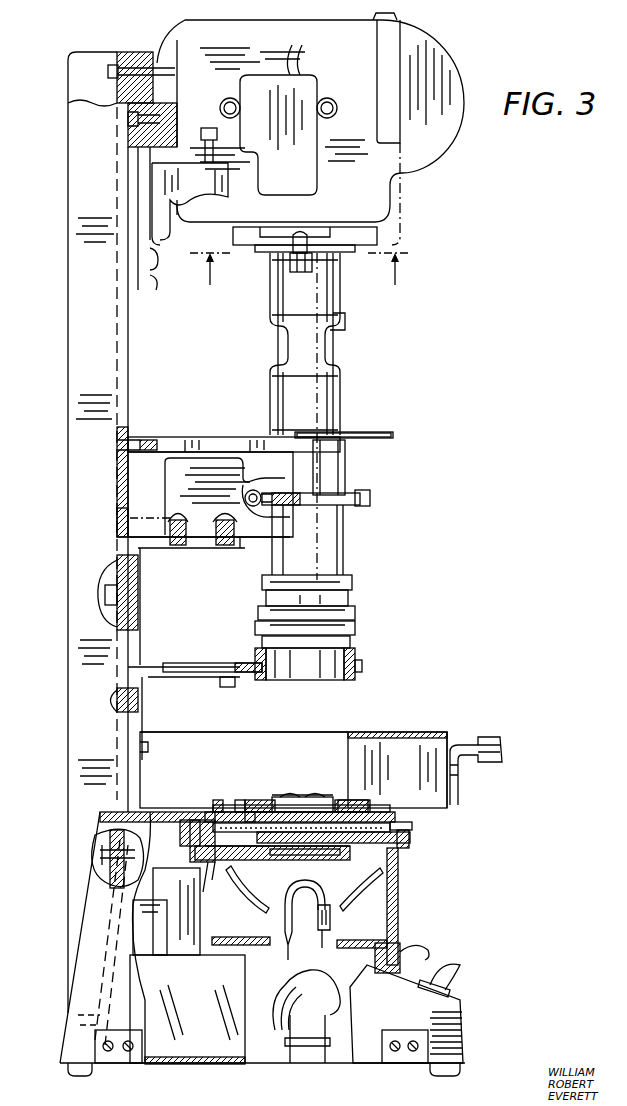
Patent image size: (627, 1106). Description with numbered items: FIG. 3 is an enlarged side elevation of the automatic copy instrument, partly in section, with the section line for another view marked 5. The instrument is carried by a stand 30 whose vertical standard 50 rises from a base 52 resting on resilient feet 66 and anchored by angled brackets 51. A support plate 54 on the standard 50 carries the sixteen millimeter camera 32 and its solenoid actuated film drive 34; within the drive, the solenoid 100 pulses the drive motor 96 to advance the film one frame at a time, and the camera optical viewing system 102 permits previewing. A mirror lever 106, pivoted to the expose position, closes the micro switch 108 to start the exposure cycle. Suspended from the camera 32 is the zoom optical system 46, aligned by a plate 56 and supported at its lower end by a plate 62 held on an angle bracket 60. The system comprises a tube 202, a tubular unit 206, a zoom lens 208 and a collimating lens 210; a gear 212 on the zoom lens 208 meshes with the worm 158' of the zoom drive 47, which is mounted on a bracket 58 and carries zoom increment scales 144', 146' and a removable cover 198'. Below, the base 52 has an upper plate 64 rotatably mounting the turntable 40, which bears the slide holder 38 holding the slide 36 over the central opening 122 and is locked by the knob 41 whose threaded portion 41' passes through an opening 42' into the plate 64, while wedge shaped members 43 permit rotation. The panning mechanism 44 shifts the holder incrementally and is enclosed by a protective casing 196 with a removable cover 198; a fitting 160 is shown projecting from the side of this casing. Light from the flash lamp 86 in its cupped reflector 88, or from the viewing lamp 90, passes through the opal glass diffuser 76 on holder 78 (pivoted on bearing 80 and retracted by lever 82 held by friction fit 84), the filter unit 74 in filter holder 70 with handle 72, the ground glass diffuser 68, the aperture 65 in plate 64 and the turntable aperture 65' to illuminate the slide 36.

The stand 30 is at (68, 228).
The camera 32 is at (221, 15).
The solenoid actuated film drive 34 is at (240, 87).
The slide 36 is at (306, 801).
The slide holder 38 is at (288, 800).
The turntable 40 is at (247, 800).
The knob 41 is at (186, 777).
The threaded portion 41' is at (277, 863).
The opening 42' is at (178, 794).
The wedge shaped members 43 is at (378, 817).
The panning mechanism 44 is at (356, 736).
The zoom optical system 46 is at (345, 378).
The zoom drive 47 is at (165, 478).
The standard 50 is at (68, 318).
The angled brackets 51 is at (125, 1061).
The base 52 is at (465, 1031).
The support plate 54 is at (136, 50).
The plate 56 is at (222, 437).
The bracket 58 is at (152, 548).
The angle bracket 60 is at (142, 668).
The plate 62 is at (212, 662).
The upper plate 64 is at (169, 826).
The aperture 65 is at (318, 840).
The aperture 65' is at (301, 788).
The resilient feet 66 is at (80, 1074).
The ground glass diffuser 68 is at (313, 822).
The filter holder 70 is at (408, 852).
The handle 72 is at (410, 826).
The filter unit 74 is at (313, 829).
The opal glass diffuser 76 is at (290, 861).
The holder 78 is at (215, 863).
The bearing 80 is at (200, 852).
The lever 82 is at (108, 809).
The friction fit 84 is at (152, 806).
The flash lamp 86 is at (330, 920).
The cupped reflector 88 is at (370, 893).
The viewing lamp 90 is at (333, 997).
The drive motor 96 is at (318, 90).
The solenoid 100 is at (235, 190).
The camera optical viewing system 102 is at (403, 70).
The lever 106 is at (280, 257).
The micro switch 108 is at (320, 267).
The central opening 122 is at (300, 806).
The 360 increment scale 144' is at (385, 424).
The 240 increment scale 146' is at (344, 435).
The worm 158' is at (247, 536).
The connector 160 is at (505, 749).
The protective casing 196 is at (340, 745).
The removable cover 198 is at (424, 762).
The removable cover 198' is at (122, 517).
The tube 202 is at (283, 300).
The tubular unit 206 is at (268, 393).
The zoom lens 208 is at (345, 468).
The collimating lens 210 is at (356, 626).
The gear 212 is at (362, 494).
The section line 5 is at (298, 269).